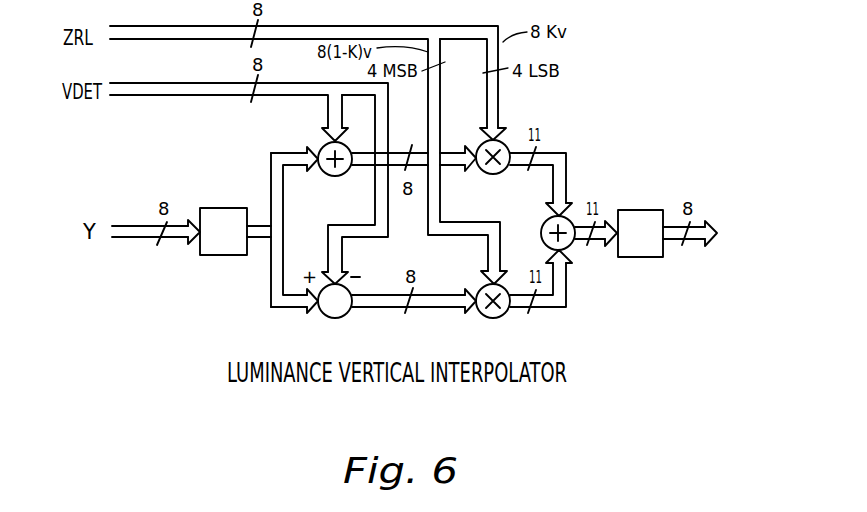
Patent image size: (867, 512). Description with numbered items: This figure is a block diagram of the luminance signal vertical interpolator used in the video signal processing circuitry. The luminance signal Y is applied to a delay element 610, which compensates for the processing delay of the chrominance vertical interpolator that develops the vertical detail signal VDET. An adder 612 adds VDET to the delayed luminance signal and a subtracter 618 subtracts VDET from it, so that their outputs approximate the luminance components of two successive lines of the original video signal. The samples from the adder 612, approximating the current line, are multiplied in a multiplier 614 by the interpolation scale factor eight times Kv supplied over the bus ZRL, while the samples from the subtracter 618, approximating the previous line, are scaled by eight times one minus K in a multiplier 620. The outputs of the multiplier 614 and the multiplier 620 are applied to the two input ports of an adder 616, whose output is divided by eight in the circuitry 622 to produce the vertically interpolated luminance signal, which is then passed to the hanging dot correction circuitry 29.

The delay element 610 is at (217, 208).
The adder 612 is at (319, 144).
The multiplier 614 is at (482, 143).
The adder 616 is at (543, 227).
The subtracter 618 is at (348, 289).
The multiplier 620 is at (483, 283).
The divide-by-8 circuitry 622 is at (643, 210).
The hanging dot correction circuitry 29 is at (726, 285).